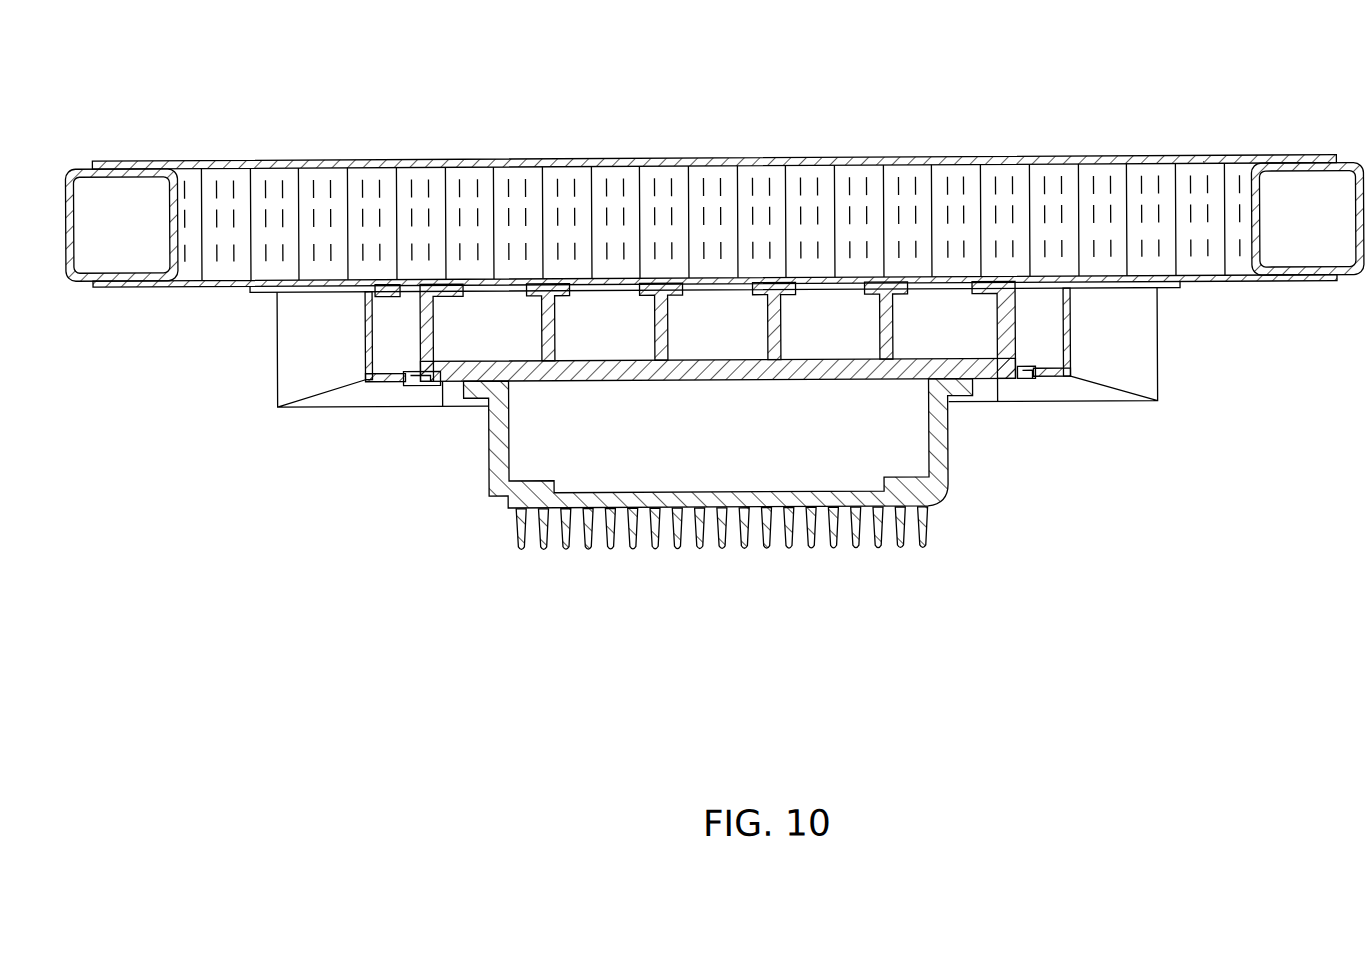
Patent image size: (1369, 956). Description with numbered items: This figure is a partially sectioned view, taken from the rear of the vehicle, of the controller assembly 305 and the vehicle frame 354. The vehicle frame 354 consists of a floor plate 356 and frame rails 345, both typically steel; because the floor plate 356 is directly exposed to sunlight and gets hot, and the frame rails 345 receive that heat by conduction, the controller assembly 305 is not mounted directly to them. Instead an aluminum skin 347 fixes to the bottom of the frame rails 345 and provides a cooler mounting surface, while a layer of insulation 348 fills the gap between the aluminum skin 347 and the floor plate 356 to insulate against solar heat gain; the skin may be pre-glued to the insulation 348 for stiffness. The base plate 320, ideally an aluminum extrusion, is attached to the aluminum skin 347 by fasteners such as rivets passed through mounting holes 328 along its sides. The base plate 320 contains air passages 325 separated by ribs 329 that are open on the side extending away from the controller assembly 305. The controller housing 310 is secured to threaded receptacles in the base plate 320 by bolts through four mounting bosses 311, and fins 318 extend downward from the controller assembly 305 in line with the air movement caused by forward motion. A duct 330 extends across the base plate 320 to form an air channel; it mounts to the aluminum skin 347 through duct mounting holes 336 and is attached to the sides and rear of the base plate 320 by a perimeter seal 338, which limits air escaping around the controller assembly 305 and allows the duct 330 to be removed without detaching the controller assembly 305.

The vehicle frame 354 is at (714, 198).
The frame rails 345 is at (82, 170).
The floor plate 356 is at (193, 160).
The aluminum skin 347 is at (181, 286).
The insulation 348 is at (223, 270).
The duct mounting holes 336 is at (343, 290).
The mounting holes 328 is at (398, 296).
The duct 330 is at (383, 380).
The perimeter seal 338 is at (418, 385).
The ribs 329 is at (648, 330).
The air passages 325 is at (722, 332).
The base plate 320 is at (840, 380).
The mounting bosses 311 is at (980, 410).
The controller housing 310 is at (948, 453).
The fins 318 is at (925, 527).
The controller assembly 305 is at (715, 426).